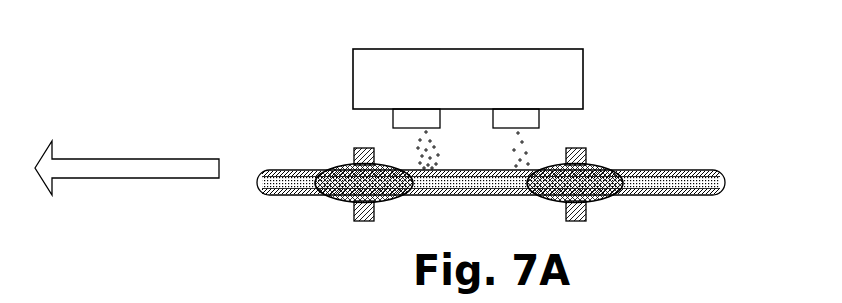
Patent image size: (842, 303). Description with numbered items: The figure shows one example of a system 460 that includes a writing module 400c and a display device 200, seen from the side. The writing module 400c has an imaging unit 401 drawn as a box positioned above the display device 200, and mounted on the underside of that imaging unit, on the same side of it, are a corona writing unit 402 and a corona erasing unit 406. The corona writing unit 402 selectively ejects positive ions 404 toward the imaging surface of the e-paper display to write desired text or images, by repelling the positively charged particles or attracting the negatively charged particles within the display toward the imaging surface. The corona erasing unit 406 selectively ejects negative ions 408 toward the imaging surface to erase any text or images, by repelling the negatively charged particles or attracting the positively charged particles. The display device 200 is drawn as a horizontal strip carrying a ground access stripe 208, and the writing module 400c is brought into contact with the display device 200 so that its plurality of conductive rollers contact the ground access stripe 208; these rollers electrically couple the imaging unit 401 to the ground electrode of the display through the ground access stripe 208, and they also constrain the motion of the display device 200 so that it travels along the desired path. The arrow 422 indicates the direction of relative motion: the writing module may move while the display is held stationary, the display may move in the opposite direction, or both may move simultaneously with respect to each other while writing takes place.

The display device 200 is at (800, 150).
The ground access stripe 208 is at (690, 196).
The imaging unit 401 is at (353, 60).
The corona writing unit 402 is at (393, 117).
The corona erasing unit 406 is at (539, 116).
The positive ions 404 is at (438, 160).
The negative ions 408 is at (510, 162).
The arrow 422 is at (87, 158).
The system 460 is at (680, 56).
The writing module 400c is at (614, 121).